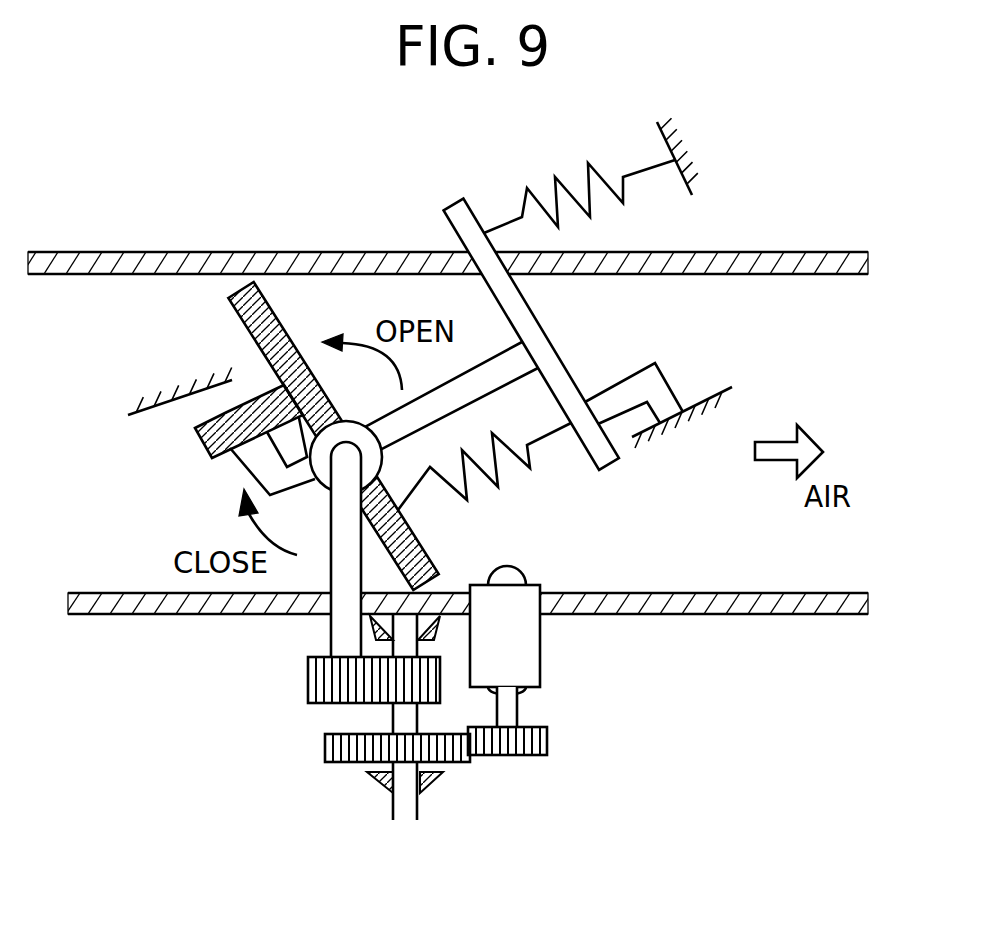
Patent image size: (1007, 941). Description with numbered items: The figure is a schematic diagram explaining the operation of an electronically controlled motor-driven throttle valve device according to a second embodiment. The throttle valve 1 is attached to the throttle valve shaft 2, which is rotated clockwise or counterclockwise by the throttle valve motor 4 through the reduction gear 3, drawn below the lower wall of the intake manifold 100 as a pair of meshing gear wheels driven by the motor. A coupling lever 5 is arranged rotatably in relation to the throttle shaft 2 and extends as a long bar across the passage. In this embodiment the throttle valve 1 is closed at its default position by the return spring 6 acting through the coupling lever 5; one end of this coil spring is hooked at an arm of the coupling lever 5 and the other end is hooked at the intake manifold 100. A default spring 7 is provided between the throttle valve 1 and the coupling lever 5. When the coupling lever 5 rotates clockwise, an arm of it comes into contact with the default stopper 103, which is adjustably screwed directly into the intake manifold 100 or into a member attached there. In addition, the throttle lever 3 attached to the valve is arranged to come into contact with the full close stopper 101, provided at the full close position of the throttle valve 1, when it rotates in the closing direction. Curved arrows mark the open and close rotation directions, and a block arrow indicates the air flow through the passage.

The throttle valve 1 is at (428, 555).
The throttle valve shaft 2 is at (330, 624).
The reduction gear 3 is at (208, 442).
The throttle valve motor 4 is at (530, 653).
The coupling lever 5 is at (525, 313).
The return spring 6 is at (537, 170).
The default spring 7 is at (510, 488).
The intake manifold 100 is at (788, 615).
The full close stopper 101 is at (163, 412).
The default stopper 103 is at (700, 392).